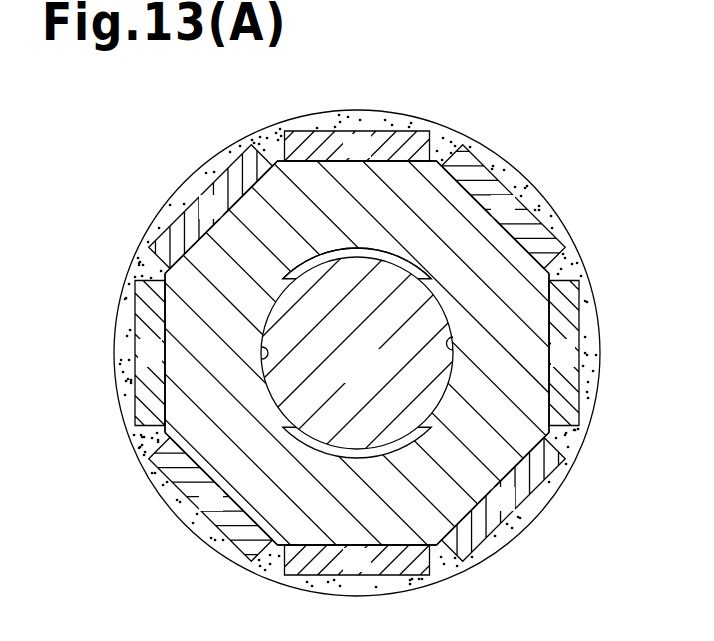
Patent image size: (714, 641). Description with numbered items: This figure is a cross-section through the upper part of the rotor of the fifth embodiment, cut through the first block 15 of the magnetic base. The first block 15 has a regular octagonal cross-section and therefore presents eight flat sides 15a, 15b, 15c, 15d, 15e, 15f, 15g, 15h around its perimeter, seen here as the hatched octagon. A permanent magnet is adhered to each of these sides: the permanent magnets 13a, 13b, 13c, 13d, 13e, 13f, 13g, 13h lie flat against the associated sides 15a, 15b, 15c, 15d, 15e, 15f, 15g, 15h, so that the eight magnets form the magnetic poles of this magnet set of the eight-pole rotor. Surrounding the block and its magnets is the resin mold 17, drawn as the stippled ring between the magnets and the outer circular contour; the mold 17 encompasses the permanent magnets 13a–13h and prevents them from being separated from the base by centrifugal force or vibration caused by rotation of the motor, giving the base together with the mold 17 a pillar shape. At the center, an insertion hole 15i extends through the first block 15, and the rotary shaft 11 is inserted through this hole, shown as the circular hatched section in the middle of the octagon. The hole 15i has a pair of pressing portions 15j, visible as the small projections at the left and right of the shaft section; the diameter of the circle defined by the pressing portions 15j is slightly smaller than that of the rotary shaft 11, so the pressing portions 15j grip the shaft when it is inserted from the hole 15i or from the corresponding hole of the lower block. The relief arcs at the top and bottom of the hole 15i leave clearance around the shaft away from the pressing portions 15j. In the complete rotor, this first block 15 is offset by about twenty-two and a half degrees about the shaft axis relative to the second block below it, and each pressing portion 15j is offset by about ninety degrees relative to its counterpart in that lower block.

The rotary shaft 11 is at (382, 378).
The permanent magnet 13a is at (385, 131).
The permanent magnet 13b is at (546, 224).
The permanent magnet 13c is at (578, 386).
The permanent magnet 13d is at (487, 543).
The permanent magnet 13e is at (328, 577).
The permanent magnet 13f is at (175, 495).
The permanent magnet 13g is at (135, 300).
The permanent magnet 13h is at (226, 164).
The first block 15 is at (437, 162).
The side 15a is at (333, 160).
The side 15b is at (488, 195).
The side 15c is at (552, 320).
The side 15d is at (517, 470).
The side 15e is at (407, 545).
The side 15f is at (240, 535).
The side 15g is at (165, 402).
The side 15h is at (200, 235).
The insertion hole 15i is at (398, 262).
The pressing portion 15j is at (263, 352).
The resin mold 17 is at (270, 575).